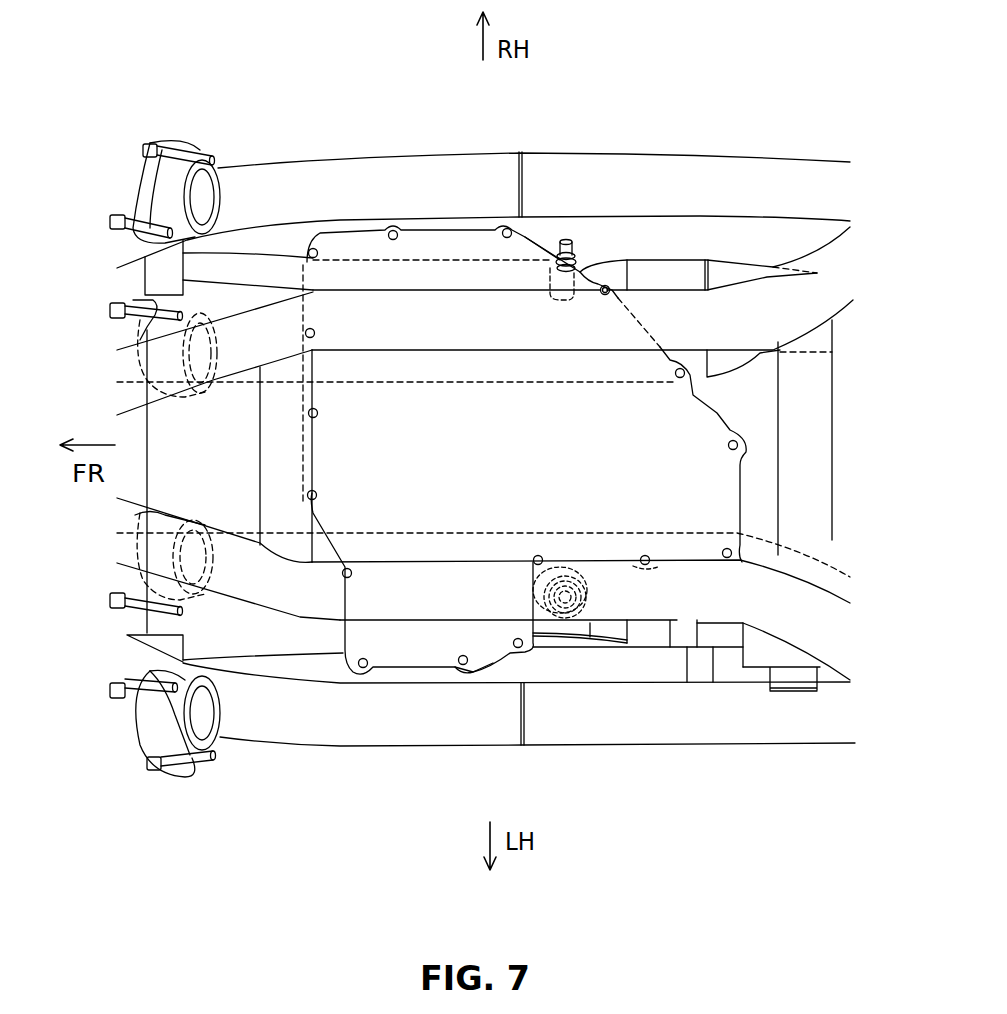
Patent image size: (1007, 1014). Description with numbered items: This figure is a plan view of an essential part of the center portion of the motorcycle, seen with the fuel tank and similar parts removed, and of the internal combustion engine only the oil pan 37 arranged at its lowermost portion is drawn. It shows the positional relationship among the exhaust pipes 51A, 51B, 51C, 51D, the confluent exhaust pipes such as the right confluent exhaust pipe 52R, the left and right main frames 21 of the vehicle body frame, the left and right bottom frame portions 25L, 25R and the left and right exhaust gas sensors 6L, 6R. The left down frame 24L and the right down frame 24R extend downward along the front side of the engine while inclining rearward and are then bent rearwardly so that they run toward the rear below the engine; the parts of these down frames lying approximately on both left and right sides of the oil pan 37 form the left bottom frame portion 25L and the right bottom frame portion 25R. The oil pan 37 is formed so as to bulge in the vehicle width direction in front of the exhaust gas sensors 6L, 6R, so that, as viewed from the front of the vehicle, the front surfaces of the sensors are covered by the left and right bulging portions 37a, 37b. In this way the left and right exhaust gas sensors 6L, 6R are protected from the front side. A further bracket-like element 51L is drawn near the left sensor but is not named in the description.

The main frame 21 is at (127, 362).
The right down frame 24R is at (127, 262).
The left down frame 24L is at (127, 635).
The right bottom frame portion 25R is at (504, 154).
The left bottom frame portion 25L is at (497, 747).
The oil pan 37 is at (717, 413).
The left bulging portion 37a is at (493, 667).
The right bulging portion 37b is at (548, 258).
The right exhaust gas sensor 6R is at (563, 240).
The left exhaust gas sensor 6L is at (567, 613).
The exhaust pipe 51A is at (142, 754).
The exhaust pipe 51B is at (127, 580).
The exhaust pipe 51C is at (127, 335).
The exhaust pipe 51D is at (120, 155).
The left bracket 51L is at (600, 640).
The right confluent exhaust pipe 52R is at (596, 297).